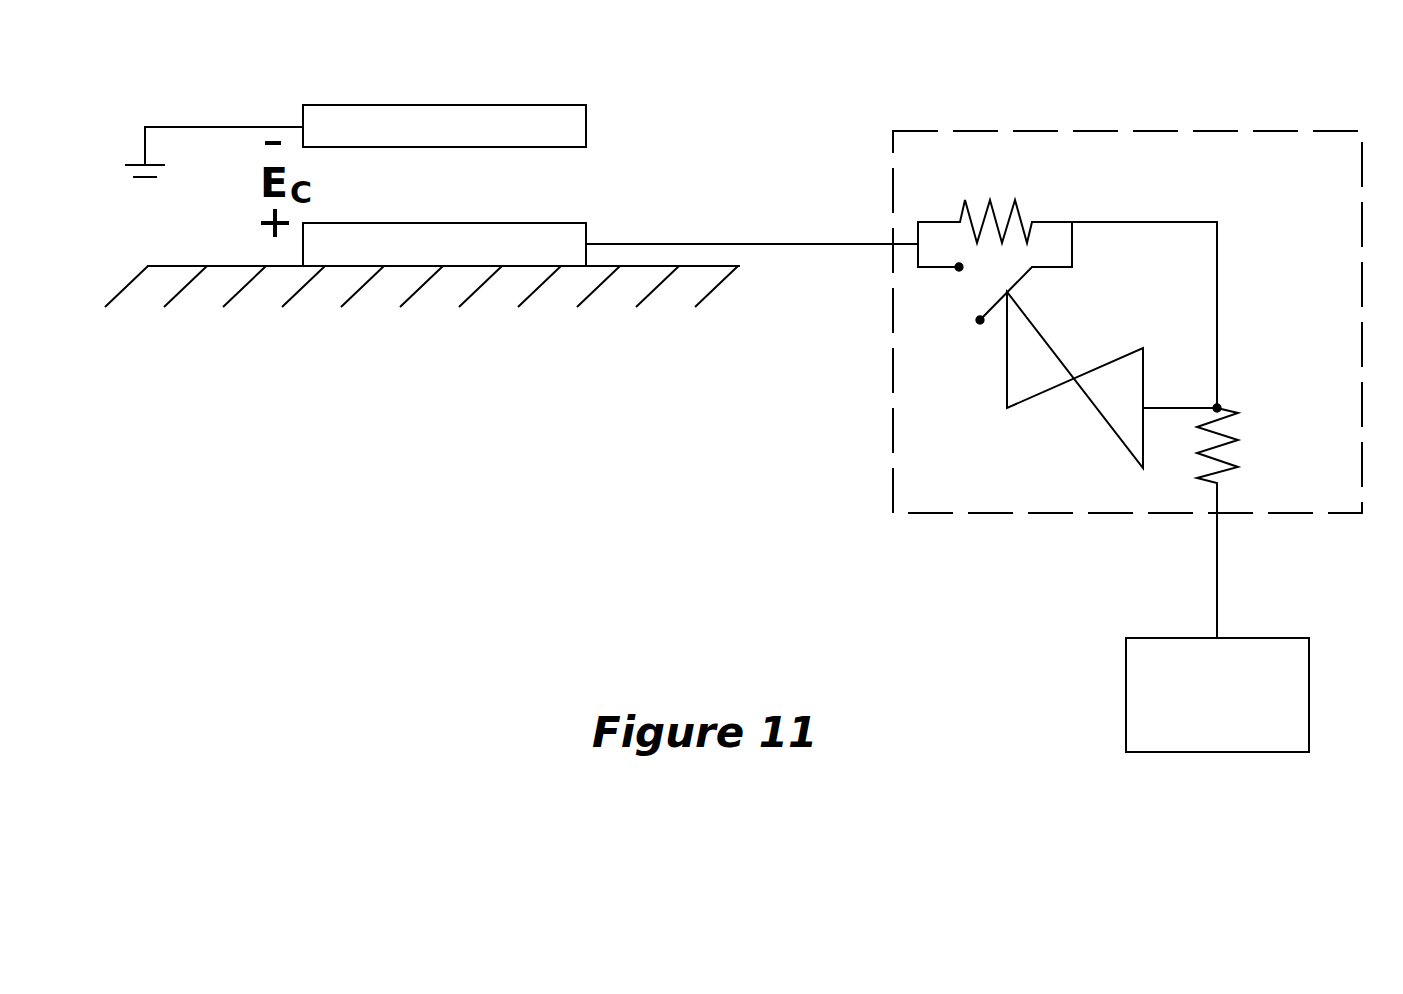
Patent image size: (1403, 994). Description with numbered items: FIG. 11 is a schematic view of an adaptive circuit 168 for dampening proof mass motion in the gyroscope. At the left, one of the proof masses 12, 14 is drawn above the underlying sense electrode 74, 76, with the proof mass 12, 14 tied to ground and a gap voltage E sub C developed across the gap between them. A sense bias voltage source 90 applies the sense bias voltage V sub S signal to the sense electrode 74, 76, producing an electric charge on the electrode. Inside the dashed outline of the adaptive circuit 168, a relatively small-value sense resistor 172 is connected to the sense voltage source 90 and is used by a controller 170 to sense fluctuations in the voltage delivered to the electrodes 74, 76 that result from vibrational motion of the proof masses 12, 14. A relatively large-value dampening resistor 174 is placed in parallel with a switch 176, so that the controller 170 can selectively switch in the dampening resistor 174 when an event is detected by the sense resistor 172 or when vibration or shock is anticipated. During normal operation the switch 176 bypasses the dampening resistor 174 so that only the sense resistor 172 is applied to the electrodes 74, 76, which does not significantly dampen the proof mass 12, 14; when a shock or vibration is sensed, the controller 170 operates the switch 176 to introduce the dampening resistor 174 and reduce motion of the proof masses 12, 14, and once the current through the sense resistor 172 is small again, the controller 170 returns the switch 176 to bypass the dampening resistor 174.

The proof mass 12 is at (392, 102).
The proof mass 14 is at (317, 115).
The sense electrode 74 is at (422, 290).
The sense electrode 76 is at (470, 248).
The adaptive circuit 168 is at (1257, 110).
The controller 170 is at (1073, 438).
The sense resistor 172 is at (1225, 408).
The dampening resistor 174 is at (961, 213).
The switch 176 is at (1017, 283).
The sense bias voltage source 90 is at (1309, 695).